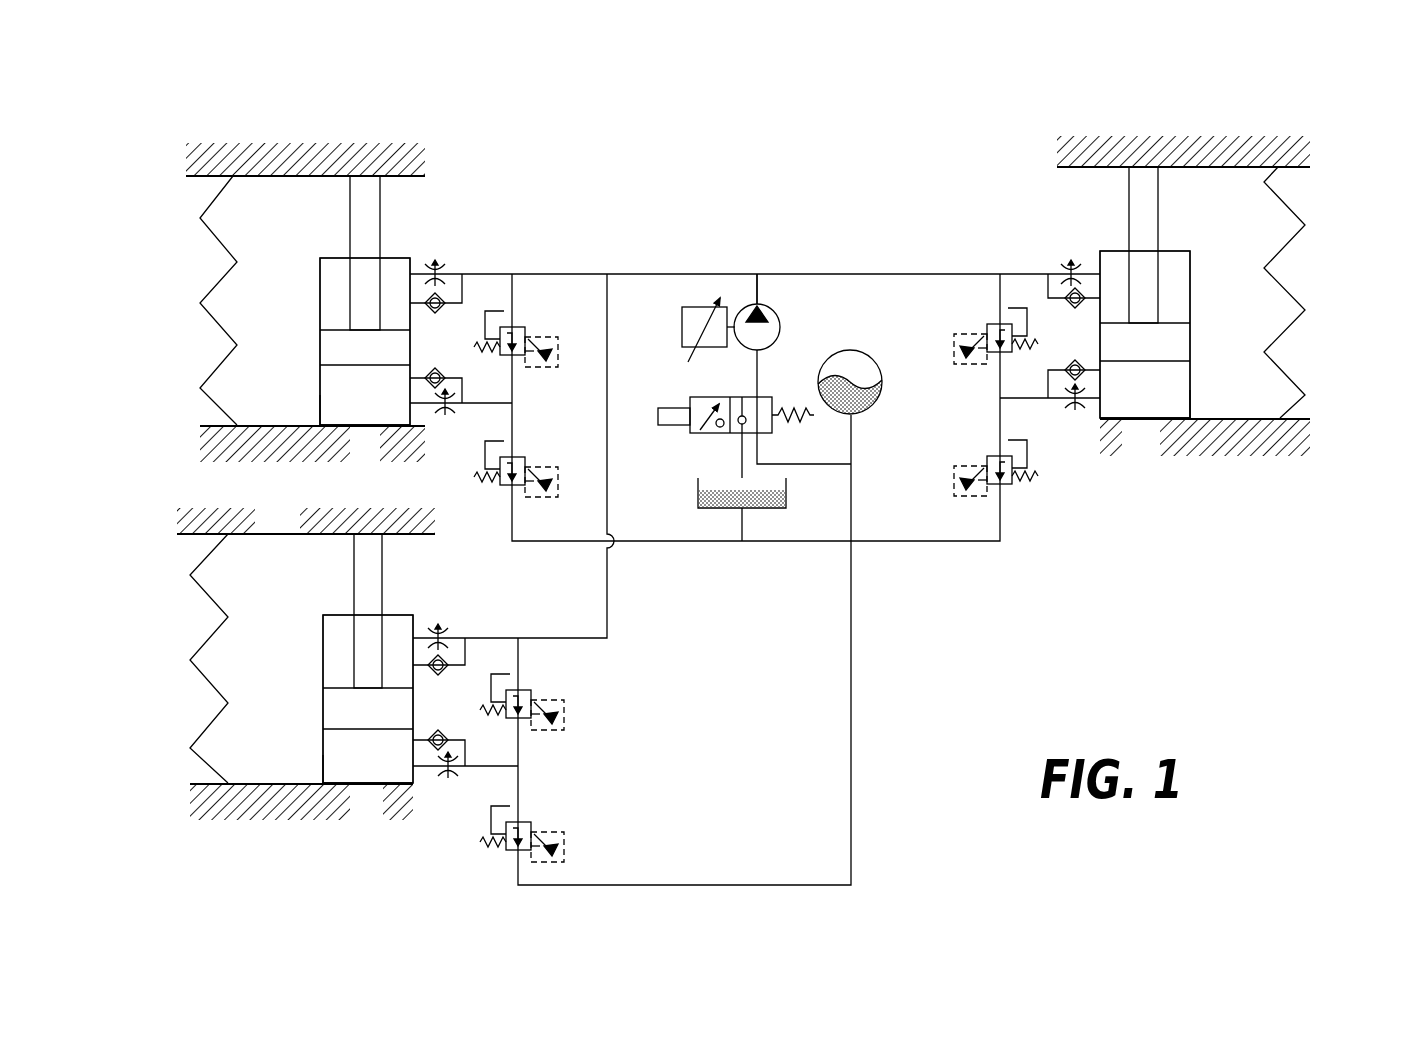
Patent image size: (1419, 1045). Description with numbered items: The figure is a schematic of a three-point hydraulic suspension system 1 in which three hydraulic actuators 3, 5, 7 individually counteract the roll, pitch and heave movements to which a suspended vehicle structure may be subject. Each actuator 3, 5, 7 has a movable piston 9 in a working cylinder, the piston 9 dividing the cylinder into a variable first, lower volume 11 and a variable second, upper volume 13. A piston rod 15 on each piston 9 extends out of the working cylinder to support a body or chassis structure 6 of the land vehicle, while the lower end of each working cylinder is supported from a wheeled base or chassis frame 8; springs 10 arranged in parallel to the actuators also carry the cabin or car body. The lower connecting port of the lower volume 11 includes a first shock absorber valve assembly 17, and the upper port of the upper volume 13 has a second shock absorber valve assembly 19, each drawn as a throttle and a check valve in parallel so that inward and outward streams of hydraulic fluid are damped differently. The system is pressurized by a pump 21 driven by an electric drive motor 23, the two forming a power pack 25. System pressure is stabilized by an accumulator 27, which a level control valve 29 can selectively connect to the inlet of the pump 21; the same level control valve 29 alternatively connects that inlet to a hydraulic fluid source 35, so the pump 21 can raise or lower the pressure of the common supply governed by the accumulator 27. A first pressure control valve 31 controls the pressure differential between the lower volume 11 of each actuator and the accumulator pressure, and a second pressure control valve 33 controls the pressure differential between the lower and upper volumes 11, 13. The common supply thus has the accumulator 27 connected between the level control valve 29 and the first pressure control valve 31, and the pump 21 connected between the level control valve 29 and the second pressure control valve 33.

The hydraulic system 1 is at (825, 180).
The hydraulic actuator 3 is at (363, 430).
The hydraulic actuator 5 is at (1155, 424).
The hydraulic actuator 7 is at (373, 792).
The body or chassis structure 6 is at (190, 155).
The wheeled base or chassis frame 8 is at (200, 445).
The piston 9 is at (330, 348).
The spring 10 is at (215, 327).
The first (lower) volume 11 is at (330, 405).
The second (upper) volume 13 is at (330, 300).
The piston rod 15 is at (365, 185).
The first shock absorber valve assembly 17 is at (445, 412).
The second shock absorber valve assembly 19 is at (462, 272).
The pump 21 is at (776, 318).
The electric drive motor 23 is at (690, 316).
The power pack 25 is at (744, 300).
The accumulator 27 is at (876, 363).
The level control valve 29 is at (775, 398).
The first pressure control valve 31 is at (518, 457).
The second pressure control valve 33 is at (518, 327).
The hydraulic fluid source 35 is at (745, 515).